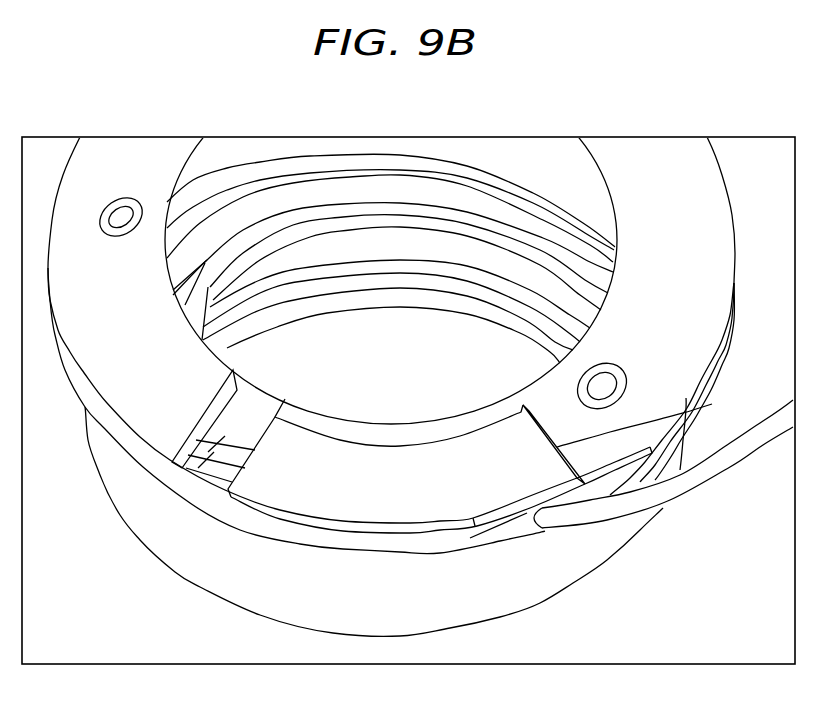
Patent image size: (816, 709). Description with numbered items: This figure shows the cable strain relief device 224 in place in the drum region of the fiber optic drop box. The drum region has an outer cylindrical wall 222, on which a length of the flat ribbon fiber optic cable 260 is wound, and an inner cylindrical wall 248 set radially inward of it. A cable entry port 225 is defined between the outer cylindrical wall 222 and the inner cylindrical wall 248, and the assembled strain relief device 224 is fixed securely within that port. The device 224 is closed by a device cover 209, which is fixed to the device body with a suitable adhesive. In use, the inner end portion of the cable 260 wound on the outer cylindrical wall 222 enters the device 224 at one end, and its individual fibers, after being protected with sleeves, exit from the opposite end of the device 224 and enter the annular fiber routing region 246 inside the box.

The device cover 209 is at (419, 493).
The outer cylindrical wall 222 is at (257, 537).
The strain relief device 224 is at (343, 527).
The cable entry port 225 is at (712, 404).
The annular fiber routing region 246 is at (205, 418).
The inner cylindrical wall 248 is at (398, 420).
The flat ribbon fiber optic cable 260 is at (672, 490).